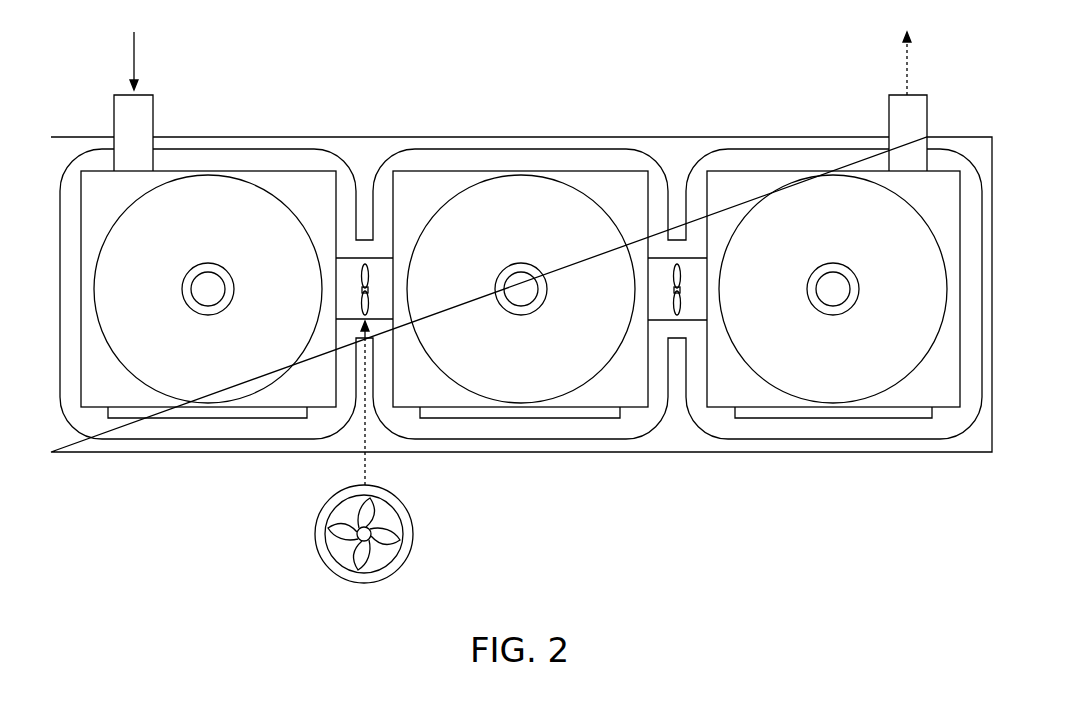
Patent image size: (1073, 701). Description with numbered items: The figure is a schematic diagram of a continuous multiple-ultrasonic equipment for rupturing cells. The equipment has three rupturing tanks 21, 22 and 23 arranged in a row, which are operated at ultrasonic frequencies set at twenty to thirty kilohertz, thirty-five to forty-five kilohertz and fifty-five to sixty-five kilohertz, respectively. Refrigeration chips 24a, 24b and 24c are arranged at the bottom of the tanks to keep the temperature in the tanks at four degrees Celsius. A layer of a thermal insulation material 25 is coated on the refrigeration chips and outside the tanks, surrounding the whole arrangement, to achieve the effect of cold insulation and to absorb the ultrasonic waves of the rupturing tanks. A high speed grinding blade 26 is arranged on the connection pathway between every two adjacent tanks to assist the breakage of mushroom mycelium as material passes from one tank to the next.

The rupturing tank 21 is at (216, 192).
The rupturing tank 22 is at (529, 192).
The rupturing tank 23 is at (842, 192).
The refrigeration chip 24a is at (192, 413).
The refrigeration chip 24b is at (504, 413).
The refrigeration chip 24c is at (817, 413).
The thermal insulation material 25 is at (955, 423).
The high speed grinding blade 26 is at (397, 534).